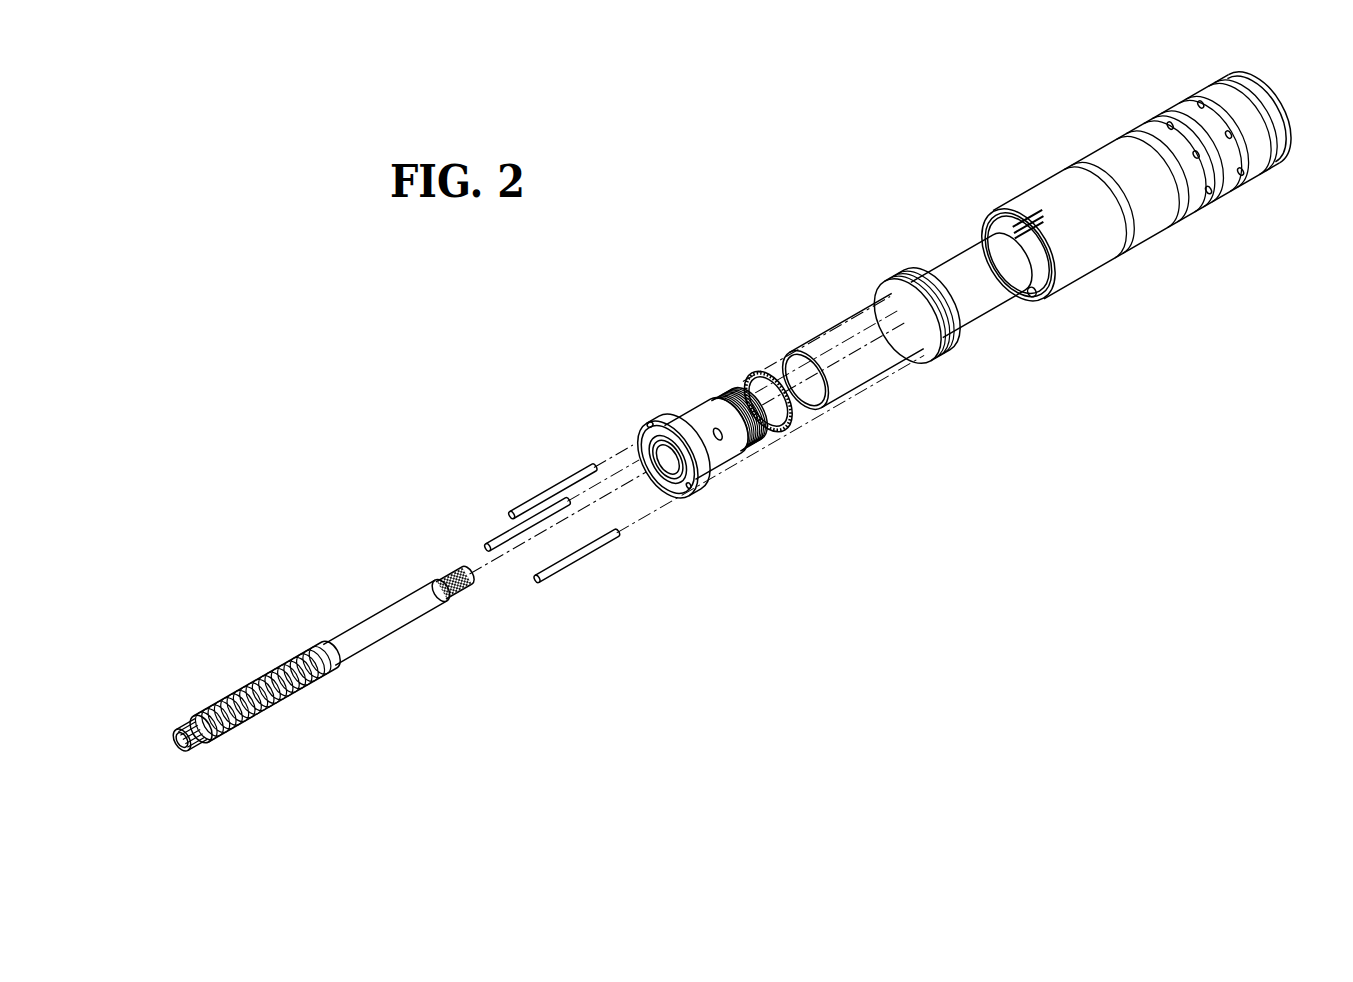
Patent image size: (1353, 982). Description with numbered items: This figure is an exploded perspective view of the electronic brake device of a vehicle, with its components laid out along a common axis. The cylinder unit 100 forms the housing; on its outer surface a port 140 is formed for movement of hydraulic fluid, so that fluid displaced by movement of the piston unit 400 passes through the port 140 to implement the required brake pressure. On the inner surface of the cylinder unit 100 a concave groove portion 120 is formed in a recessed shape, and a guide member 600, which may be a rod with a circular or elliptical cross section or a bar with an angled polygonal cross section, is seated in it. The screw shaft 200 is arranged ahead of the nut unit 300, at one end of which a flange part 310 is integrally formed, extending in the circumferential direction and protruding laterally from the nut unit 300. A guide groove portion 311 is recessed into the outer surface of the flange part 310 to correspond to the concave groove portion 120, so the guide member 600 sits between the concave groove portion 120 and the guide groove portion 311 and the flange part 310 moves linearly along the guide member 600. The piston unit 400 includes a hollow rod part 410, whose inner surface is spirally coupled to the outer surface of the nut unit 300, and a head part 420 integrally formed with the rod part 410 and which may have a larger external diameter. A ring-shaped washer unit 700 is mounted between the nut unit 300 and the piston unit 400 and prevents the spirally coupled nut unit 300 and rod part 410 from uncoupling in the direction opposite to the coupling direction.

The cylinder unit 100 is at (1135, 198).
The concave groove portion 120 is at (1032, 292).
The port 140 is at (1200, 150).
The screw shaft 200 is at (348, 627).
The nut unit 300 is at (703, 465).
The flange part 310 is at (673, 456).
The guide groove portion 311 is at (650, 424).
The piston unit 400 is at (911, 342).
The rod part 410 is at (907, 321).
The head part 420 is at (880, 356).
The guide member 600 is at (567, 572).
The washer unit 700 is at (752, 377).